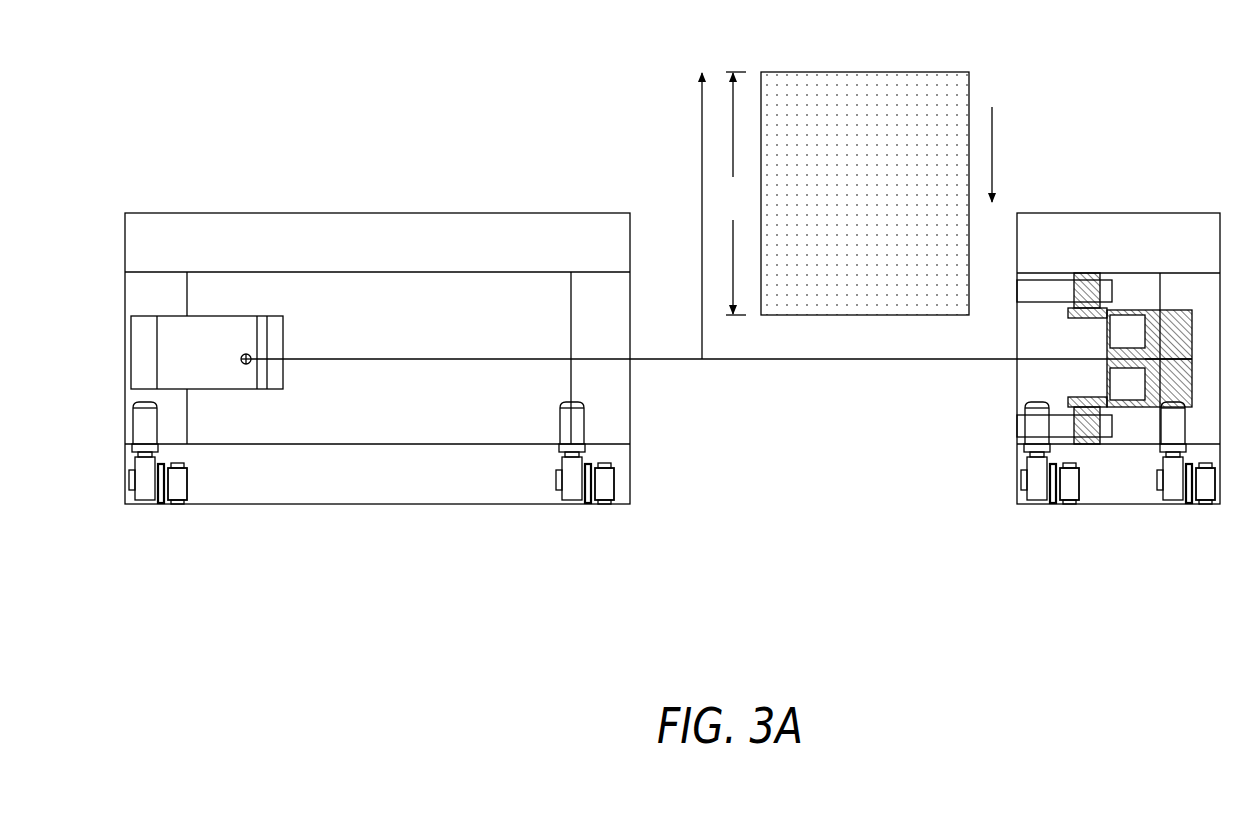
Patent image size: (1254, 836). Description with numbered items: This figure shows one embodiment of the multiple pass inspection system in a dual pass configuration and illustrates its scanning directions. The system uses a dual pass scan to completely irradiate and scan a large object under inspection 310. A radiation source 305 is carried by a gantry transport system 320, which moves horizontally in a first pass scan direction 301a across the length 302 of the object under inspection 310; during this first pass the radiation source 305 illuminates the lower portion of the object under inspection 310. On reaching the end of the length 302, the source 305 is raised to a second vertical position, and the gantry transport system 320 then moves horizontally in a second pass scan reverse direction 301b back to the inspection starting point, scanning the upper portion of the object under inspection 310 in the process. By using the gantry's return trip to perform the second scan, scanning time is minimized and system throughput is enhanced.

The gantry transport system 320 is at (153, 230).
The radiation source 305 is at (137, 370).
The object under inspection 310 is at (872, 82).
The first pass scan direction 301a is at (676, 216).
The second pass scan reverse direction 301b is at (1000, 139).
The length 302 is at (733, 193).